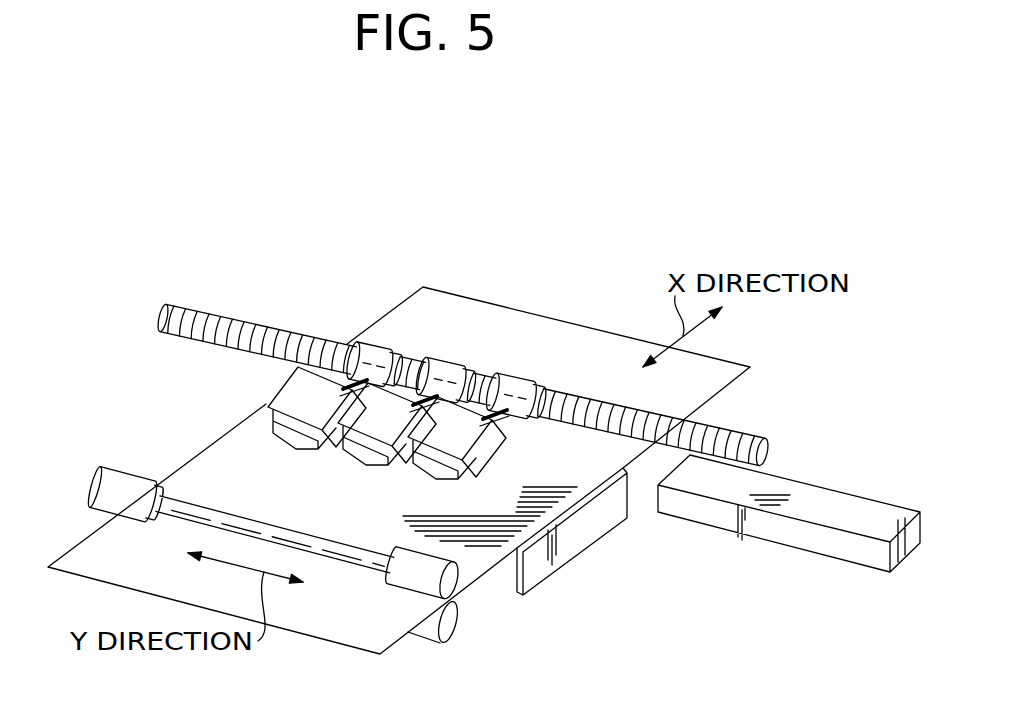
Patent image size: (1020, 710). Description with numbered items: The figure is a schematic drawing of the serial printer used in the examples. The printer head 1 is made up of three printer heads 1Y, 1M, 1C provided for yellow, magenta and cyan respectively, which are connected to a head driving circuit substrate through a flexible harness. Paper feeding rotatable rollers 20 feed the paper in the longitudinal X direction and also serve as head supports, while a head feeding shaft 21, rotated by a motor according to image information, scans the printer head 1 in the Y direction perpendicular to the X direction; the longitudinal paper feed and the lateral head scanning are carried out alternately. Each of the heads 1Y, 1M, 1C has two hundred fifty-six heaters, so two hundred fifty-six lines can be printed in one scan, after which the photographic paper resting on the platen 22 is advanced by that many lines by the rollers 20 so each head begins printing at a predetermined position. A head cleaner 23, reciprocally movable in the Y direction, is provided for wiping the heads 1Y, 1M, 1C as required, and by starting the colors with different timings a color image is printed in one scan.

The printer head 1 is at (526, 232).
The printer head for yellow 1Y is at (327, 371).
The printer head for magenta 1M is at (392, 402).
The printer head for cyan 1C is at (460, 412).
The paper feeding rotatable rollers 20 is at (462, 583).
The head feeding shaft 21 is at (707, 425).
The platen 22 is at (580, 530).
The head cleaner 23 is at (807, 508).